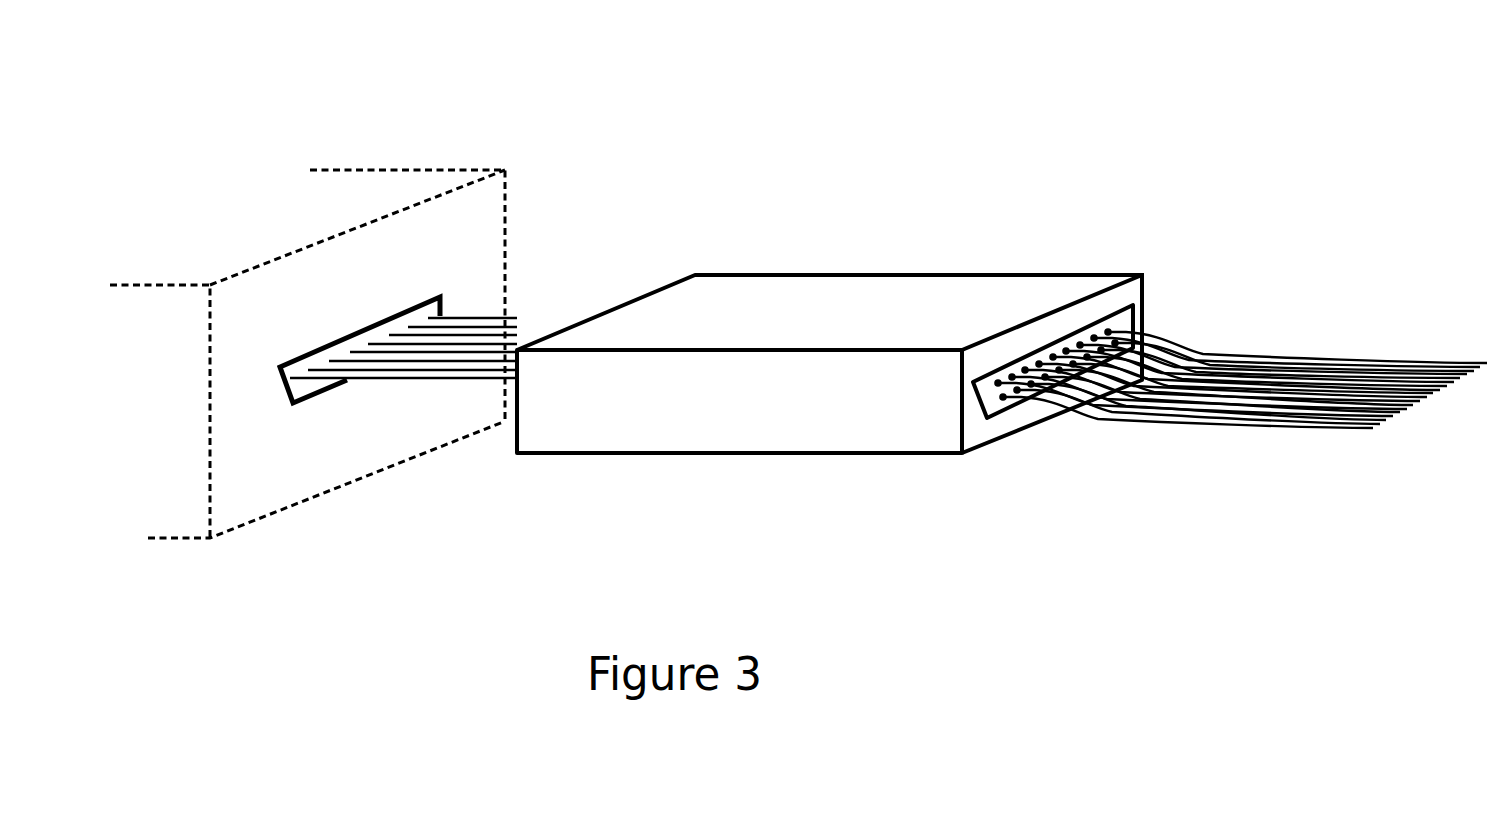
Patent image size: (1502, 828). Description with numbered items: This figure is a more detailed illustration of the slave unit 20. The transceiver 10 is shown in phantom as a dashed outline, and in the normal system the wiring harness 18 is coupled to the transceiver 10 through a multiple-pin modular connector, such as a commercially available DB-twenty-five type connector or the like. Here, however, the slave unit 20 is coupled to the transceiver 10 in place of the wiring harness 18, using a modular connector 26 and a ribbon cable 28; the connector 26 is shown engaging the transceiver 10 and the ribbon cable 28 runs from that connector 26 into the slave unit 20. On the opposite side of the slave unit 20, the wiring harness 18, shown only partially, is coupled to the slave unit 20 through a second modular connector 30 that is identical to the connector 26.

The transceiver 10 is at (430, 170).
The wiring harness 18 is at (1220, 352).
The slave unit 20 is at (889, 273).
The modular connector 26 is at (292, 398).
The ribbon cable 28 is at (428, 380).
The modular connector 30 is at (1107, 332).